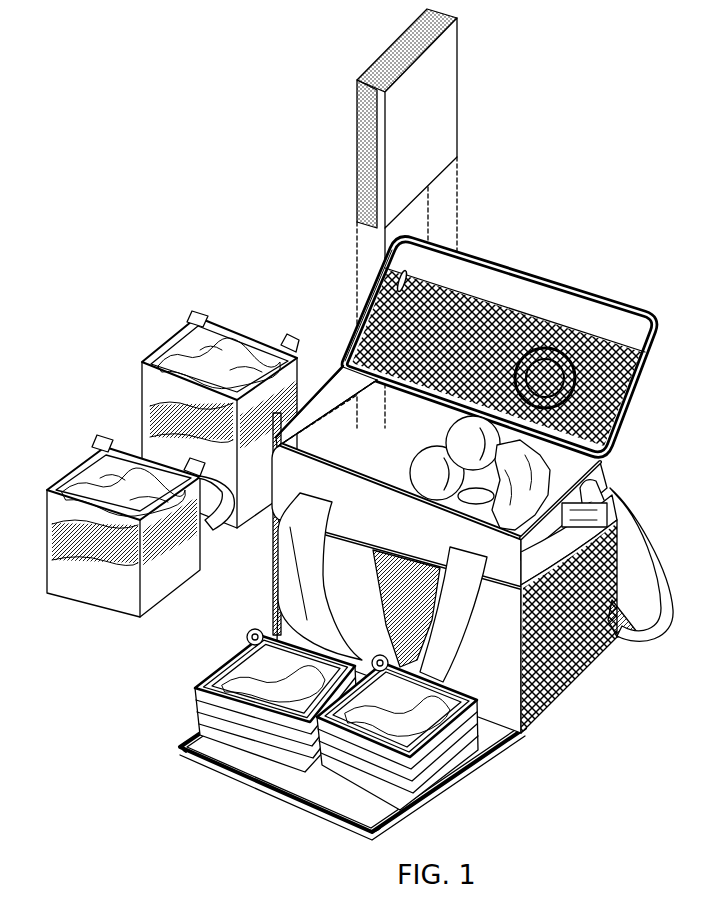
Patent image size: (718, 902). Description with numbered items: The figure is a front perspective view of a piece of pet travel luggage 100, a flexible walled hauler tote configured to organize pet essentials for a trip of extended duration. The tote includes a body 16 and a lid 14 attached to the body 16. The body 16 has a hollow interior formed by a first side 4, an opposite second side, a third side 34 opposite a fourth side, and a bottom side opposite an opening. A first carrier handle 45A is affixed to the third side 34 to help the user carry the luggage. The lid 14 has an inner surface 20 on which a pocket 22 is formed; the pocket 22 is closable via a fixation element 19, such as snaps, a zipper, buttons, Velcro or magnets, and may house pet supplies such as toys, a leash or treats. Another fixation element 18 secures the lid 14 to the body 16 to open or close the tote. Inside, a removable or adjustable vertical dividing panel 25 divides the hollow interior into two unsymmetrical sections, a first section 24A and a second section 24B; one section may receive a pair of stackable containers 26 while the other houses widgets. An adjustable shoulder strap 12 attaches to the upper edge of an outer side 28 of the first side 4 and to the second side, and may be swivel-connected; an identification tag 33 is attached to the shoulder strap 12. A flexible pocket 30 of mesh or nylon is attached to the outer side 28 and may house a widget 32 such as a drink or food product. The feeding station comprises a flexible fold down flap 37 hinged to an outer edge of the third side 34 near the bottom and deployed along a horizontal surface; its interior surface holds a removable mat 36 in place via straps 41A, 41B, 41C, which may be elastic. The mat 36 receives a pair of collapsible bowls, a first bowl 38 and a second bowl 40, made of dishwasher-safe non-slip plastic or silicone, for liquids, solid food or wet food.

The piece of pet travel luggage 100 is at (302, 218).
The first side 4 is at (607, 652).
The adjustable shoulder strap 12 is at (657, 553).
The lid 14 is at (652, 368).
The body 16 is at (653, 482).
The fixation element 18 is at (643, 312).
The fixation element 19 is at (392, 262).
The inner surface 20 is at (558, 308).
The pocket 22 is at (483, 292).
The first section 24A is at (360, 407).
The second section 24B is at (620, 427).
The dividing panel 25 is at (399, 64).
The pair of stackable containers 26 is at (80, 452).
The outer side 28 is at (172, 330).
The flexible pocket 30 is at (560, 703).
The widget 32 is at (514, 561).
The identification tag 33 is at (607, 496).
The third side 34 is at (288, 492).
The removable mat 36 is at (298, 777).
The flexible fold down flap 37 is at (415, 821).
The first bowl 38 is at (270, 703).
The second bowl 40 is at (417, 720).
The strap 41A is at (518, 742).
The strap 41B is at (363, 819).
The strap 41C is at (198, 765).
The first carrier handle 45A is at (305, 578).